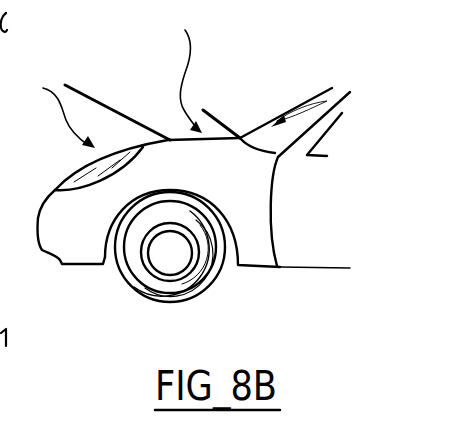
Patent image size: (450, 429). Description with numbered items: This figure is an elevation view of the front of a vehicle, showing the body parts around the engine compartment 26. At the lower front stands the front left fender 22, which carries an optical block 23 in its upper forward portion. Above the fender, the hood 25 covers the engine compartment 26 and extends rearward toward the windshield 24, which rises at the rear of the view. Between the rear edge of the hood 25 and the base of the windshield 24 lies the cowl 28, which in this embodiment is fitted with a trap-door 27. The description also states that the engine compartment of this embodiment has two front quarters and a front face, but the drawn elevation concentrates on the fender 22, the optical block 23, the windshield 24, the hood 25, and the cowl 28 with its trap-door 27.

The front left fender 22 is at (228, 192).
The optical block 23 is at (83, 180).
The windshield 24 is at (300, 123).
The hood 25 is at (104, 104).
The engine compartment 26 is at (54, 108).
The trap-door 27 is at (221, 122).
The cowl 28 is at (186, 69).